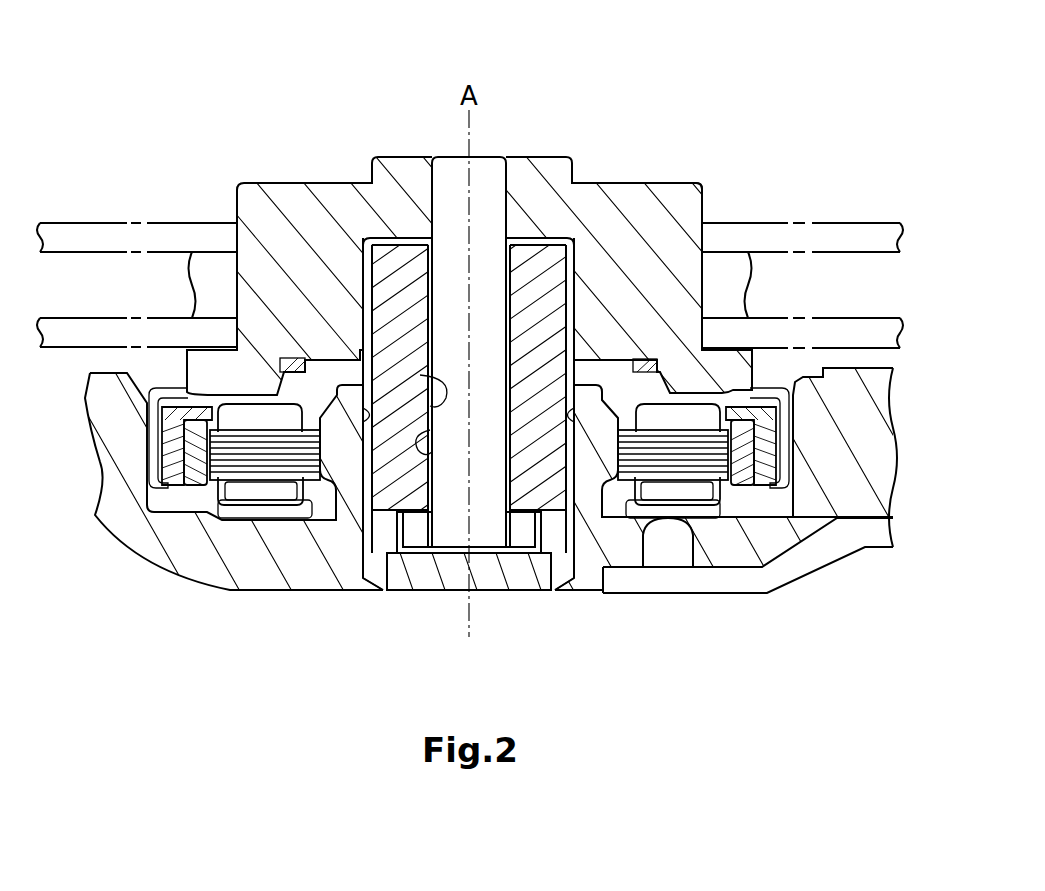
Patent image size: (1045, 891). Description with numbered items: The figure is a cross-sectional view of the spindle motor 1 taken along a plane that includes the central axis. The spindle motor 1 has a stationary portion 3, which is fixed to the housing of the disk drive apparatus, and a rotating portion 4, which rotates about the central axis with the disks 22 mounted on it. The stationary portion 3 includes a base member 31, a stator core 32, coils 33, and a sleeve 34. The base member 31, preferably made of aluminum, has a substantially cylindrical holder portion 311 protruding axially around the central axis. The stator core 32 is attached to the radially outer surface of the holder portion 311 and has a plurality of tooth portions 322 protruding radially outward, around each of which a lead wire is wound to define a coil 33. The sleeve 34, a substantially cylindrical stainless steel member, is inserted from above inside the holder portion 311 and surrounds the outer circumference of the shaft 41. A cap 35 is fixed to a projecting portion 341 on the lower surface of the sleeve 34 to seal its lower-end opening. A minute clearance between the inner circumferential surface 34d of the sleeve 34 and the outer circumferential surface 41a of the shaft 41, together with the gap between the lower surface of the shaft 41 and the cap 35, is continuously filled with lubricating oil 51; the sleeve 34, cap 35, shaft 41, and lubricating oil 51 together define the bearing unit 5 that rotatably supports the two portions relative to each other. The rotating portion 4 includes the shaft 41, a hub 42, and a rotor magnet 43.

The spindle motor 1 is at (146, 100).
The disks 22 is at (97, 218).
The stationary portion 3 is at (815, 600).
The base member 31 is at (722, 556).
The holder portion 311 is at (590, 560).
The stator core 32 is at (223, 510).
The tooth portions 322 is at (258, 470).
The coils 33 is at (290, 496).
The sleeve 34 is at (540, 270).
The inner circumferential surface 34d is at (468, 388).
The projecting portion 341 is at (553, 578).
The cap 35 is at (485, 578).
The rotating portion 4 is at (828, 160).
The shaft 41 is at (496, 165).
The outer circumferential surface 41a is at (428, 454).
The hub 42 is at (681, 200).
The rotor magnet 43 is at (172, 482).
The bearing unit 5 is at (382, 597).
The lubricating oil 51 is at (421, 265).